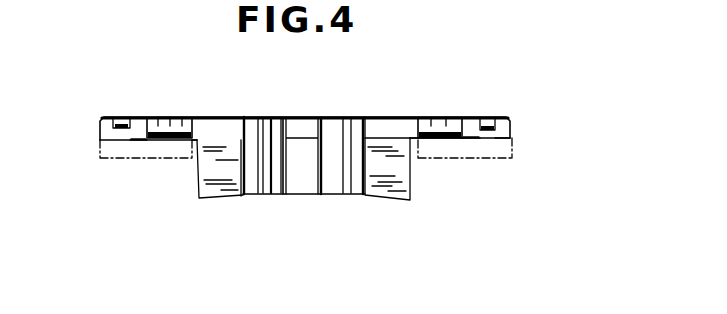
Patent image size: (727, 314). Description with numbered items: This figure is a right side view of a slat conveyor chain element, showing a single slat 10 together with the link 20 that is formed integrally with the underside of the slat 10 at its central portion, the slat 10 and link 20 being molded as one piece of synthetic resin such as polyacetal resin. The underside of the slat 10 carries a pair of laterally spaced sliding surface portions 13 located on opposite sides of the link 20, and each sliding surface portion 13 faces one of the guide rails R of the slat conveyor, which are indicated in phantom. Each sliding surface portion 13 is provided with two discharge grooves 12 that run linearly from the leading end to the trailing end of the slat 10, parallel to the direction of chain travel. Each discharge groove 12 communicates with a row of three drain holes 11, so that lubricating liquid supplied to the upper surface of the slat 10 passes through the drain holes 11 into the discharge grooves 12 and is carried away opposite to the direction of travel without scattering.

The slat 10 is at (222, 116).
The drain hole 11 is at (118, 115).
The discharge groove 12 is at (120, 140).
The sliding surface portion 13 is at (138, 142).
The link 20 is at (410, 172).
The guide rail R is at (100, 152).